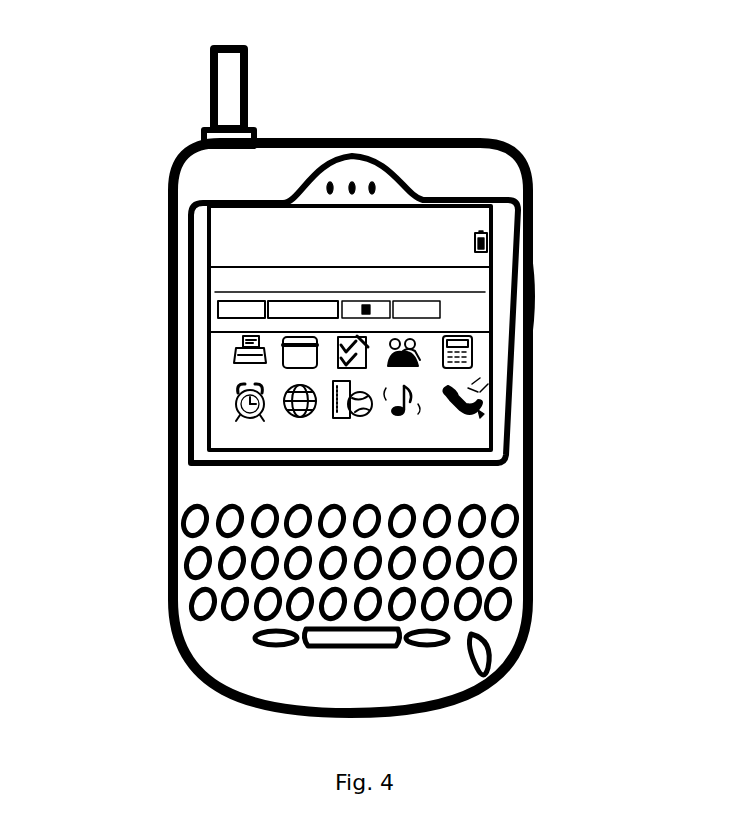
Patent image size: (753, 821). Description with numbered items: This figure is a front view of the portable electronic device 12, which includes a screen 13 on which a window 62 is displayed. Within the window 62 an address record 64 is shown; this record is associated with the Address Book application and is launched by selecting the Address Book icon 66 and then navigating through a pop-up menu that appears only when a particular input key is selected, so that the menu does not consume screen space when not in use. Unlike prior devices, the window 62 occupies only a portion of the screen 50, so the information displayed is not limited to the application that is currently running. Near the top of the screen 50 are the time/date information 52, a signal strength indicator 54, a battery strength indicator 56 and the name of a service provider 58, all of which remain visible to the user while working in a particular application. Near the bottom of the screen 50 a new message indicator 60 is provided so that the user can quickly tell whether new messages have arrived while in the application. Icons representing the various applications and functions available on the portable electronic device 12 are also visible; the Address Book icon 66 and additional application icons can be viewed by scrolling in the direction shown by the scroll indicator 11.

The scroll indicator 11 is at (476, 412).
The portable electronic device 12 is at (160, 117).
The screen 13 is at (233, 435).
The screen 50 is at (493, 252).
The time/date information 52 is at (220, 223).
The signal strength indicator 54 is at (460, 217).
The battery strength indicator 56 is at (492, 243).
The name of a service provider 58 is at (430, 265).
The new message indicator 60 is at (508, 468).
The window 62 is at (217, 277).
The address record 64 is at (212, 327).
The Address Book icon 66 is at (227, 365).